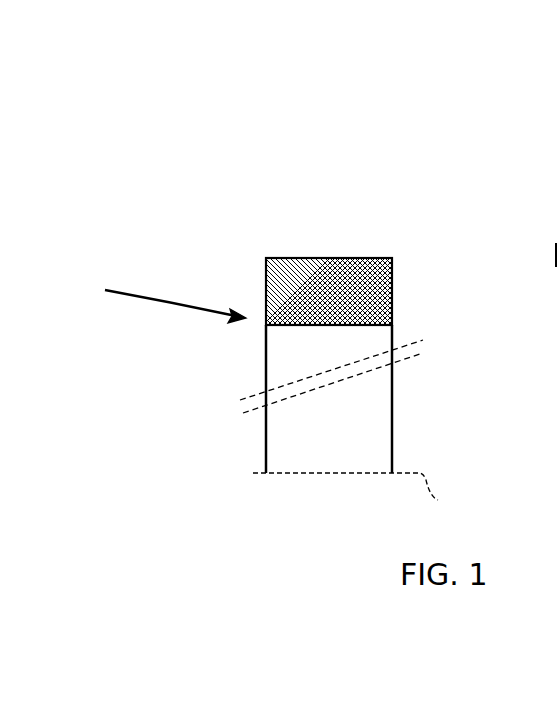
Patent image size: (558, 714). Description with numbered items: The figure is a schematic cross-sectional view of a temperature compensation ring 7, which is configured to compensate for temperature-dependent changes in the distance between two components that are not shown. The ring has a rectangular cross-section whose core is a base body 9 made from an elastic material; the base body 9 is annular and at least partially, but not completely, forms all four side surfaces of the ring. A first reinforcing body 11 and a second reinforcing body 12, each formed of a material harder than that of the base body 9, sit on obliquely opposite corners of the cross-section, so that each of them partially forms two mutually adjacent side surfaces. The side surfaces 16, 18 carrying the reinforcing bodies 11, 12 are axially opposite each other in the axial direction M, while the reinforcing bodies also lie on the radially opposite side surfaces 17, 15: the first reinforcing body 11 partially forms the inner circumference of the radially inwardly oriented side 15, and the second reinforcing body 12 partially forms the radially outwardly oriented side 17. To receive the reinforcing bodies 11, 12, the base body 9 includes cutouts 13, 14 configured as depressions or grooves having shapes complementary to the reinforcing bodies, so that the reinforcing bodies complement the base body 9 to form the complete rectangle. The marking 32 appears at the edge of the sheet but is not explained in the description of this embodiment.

The temperature compensation ring 7 is at (151, 296).
The base body 9 is at (318, 275).
The first reinforcing body 11 is at (333, 258).
The second reinforcing body 12 is at (350, 260).
The cutout 13 is at (284, 300).
The cutout 14 is at (392, 292).
The radially inwardly oriented side surface 15 is at (340, 327).
The side surface 16 is at (392, 305).
The radially outwardly oriented side surface 17 is at (385, 257).
The side surface 18 is at (263, 280).
The unit 32 is at (534, 252).
The axial direction M is at (367, 493).